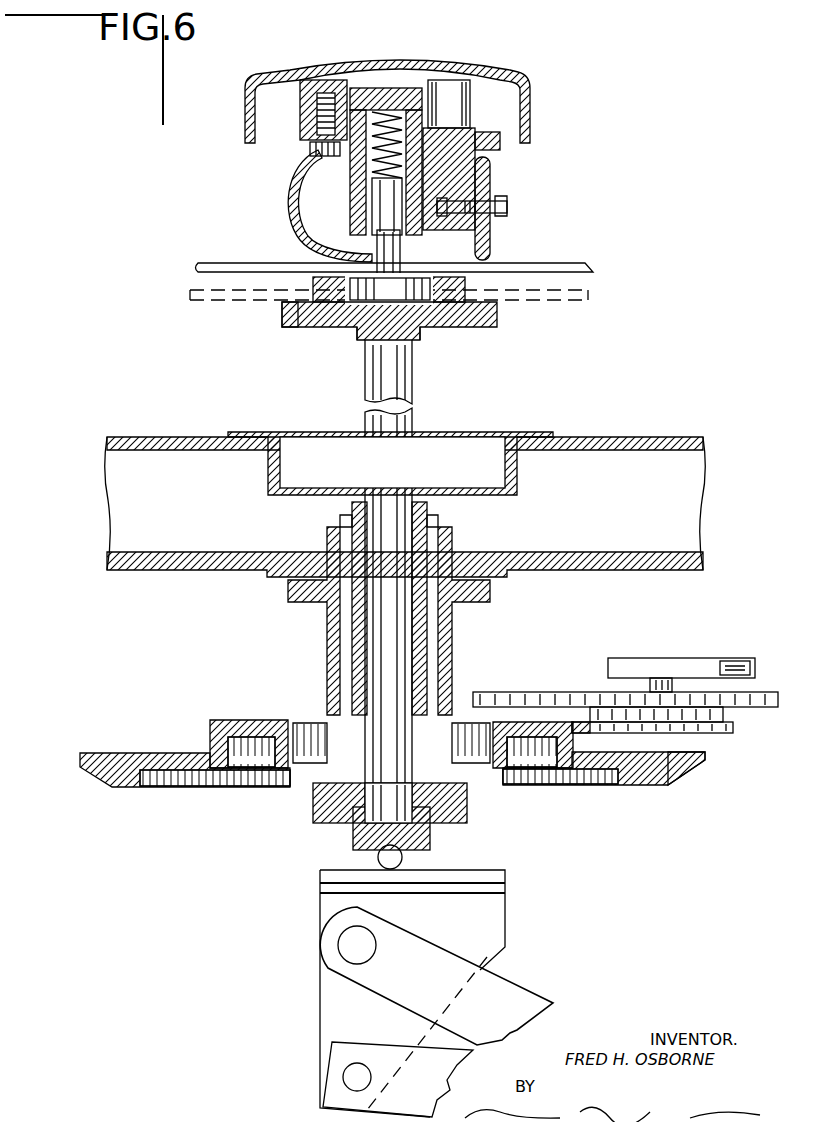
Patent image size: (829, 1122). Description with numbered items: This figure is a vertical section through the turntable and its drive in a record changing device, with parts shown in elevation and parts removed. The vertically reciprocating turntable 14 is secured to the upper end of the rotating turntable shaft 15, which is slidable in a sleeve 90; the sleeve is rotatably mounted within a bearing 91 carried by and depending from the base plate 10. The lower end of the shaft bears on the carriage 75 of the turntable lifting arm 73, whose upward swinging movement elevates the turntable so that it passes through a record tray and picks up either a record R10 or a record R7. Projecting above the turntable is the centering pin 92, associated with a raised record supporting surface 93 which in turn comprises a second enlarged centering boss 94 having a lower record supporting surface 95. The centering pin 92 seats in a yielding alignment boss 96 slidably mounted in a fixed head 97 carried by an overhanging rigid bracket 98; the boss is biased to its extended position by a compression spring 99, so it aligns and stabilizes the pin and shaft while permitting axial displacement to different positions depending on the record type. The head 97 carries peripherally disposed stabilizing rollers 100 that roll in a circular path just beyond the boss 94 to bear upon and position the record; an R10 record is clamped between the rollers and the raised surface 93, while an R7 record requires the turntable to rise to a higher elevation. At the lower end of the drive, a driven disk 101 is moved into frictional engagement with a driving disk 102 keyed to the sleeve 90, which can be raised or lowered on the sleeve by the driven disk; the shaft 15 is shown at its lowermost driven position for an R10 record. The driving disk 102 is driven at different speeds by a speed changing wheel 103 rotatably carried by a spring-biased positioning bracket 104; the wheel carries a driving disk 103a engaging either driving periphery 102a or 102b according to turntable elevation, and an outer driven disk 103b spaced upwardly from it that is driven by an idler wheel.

The base plate 10 is at (620, 437).
The turntable 14 is at (450, 310).
The turntable shaft 15 is at (388, 385).
The turntable lifting arm 73 is at (498, 1005).
The carriage 75 is at (470, 873).
The sleeve 90 is at (420, 640).
The bearing 91 is at (335, 616).
The centering pin 92 is at (390, 266).
The raised record supporting surface 93 is at (322, 261).
The enlarged centering boss 94 is at (455, 295).
The lower record supporting surface 95 is at (297, 311).
The yielding alignment boss 96 is at (490, 168).
The fixed head 97 is at (488, 191).
The overhanging rigid bracket 98 is at (525, 86).
The compression spring 99 is at (415, 146).
The stabilizing rollers 100 is at (492, 238).
The driven disk 101 is at (292, 810).
The driving disk 102 is at (270, 786).
The driving periphery 102a is at (700, 770).
The driving periphery 102b is at (583, 733).
The speed changing wheel 103 is at (570, 700).
The driving disk 103a is at (733, 728).
The outer driven disk 103b is at (472, 691).
The positioning bracket 104 is at (695, 668).
The record R7 is at (565, 300).
The record R10 is at (565, 270).